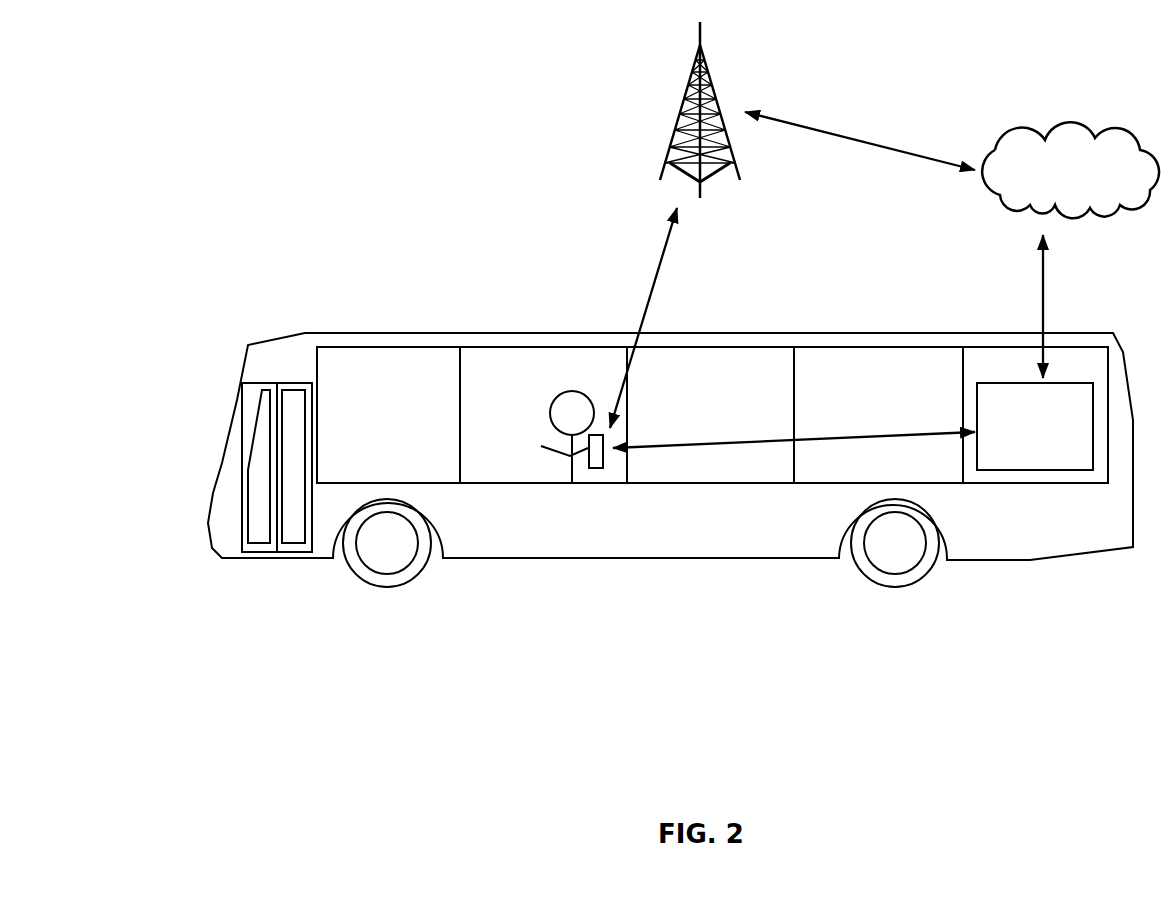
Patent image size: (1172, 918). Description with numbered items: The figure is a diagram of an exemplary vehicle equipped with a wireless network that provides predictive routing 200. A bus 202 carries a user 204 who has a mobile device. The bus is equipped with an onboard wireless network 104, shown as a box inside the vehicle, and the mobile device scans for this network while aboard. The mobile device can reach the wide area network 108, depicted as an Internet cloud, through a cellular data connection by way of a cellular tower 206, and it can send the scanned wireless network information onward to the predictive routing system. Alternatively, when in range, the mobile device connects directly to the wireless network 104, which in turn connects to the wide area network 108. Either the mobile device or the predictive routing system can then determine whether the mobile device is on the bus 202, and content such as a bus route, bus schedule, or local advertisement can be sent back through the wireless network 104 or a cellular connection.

The vehicle equipped with a wireless network that provides predictive routing 200 is at (244, 56).
The bus 202 is at (233, 404).
The user 204 is at (551, 418).
The cellular tower 206 is at (679, 89).
The wireless network 104 is at (1035, 426).
The wide area network 108 is at (1070, 170).